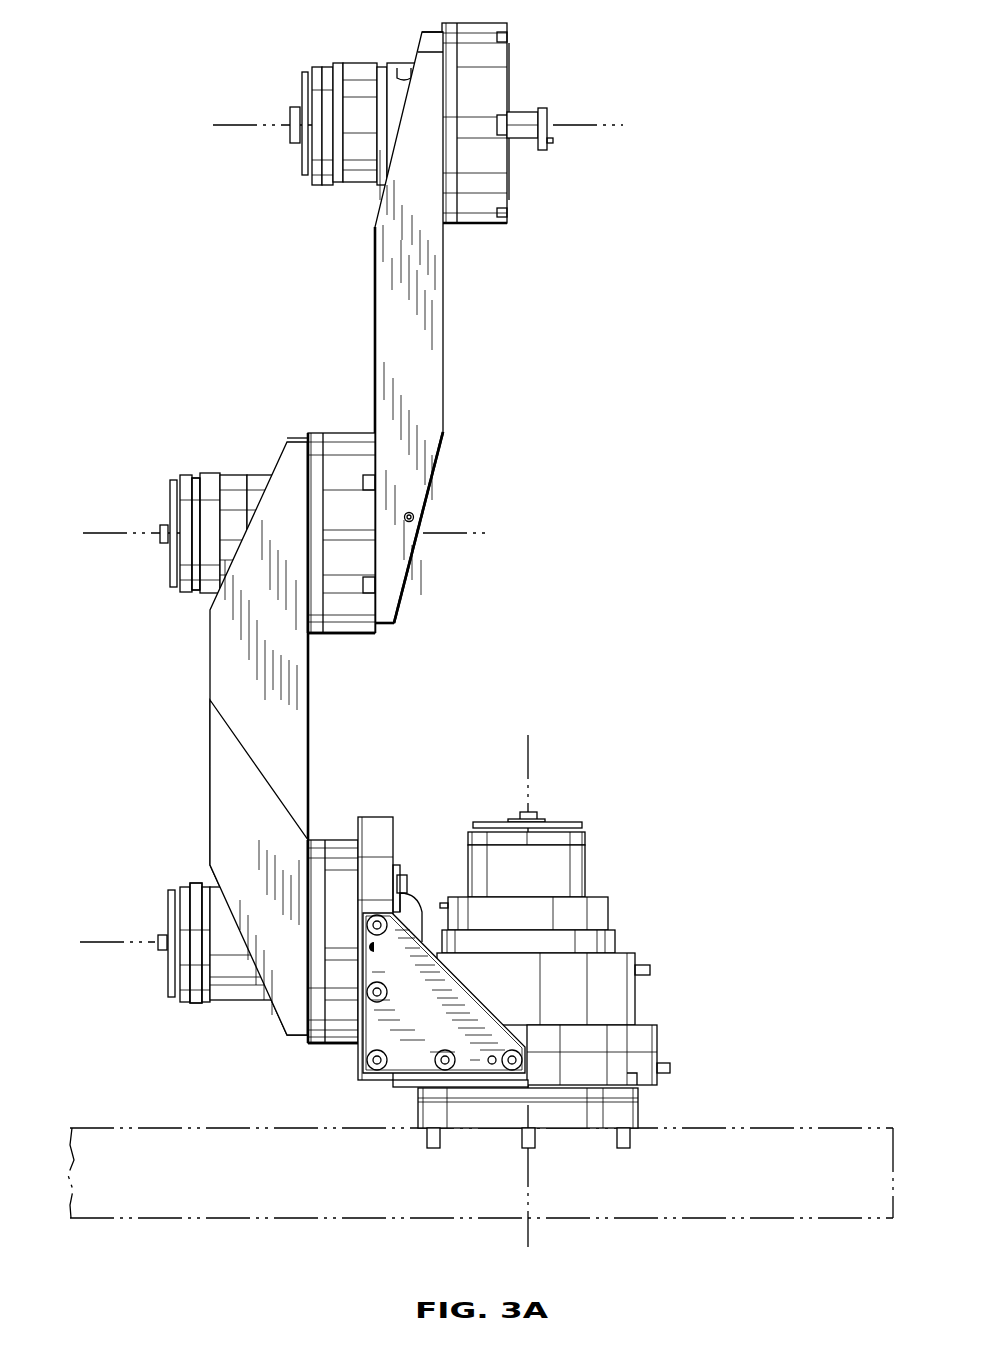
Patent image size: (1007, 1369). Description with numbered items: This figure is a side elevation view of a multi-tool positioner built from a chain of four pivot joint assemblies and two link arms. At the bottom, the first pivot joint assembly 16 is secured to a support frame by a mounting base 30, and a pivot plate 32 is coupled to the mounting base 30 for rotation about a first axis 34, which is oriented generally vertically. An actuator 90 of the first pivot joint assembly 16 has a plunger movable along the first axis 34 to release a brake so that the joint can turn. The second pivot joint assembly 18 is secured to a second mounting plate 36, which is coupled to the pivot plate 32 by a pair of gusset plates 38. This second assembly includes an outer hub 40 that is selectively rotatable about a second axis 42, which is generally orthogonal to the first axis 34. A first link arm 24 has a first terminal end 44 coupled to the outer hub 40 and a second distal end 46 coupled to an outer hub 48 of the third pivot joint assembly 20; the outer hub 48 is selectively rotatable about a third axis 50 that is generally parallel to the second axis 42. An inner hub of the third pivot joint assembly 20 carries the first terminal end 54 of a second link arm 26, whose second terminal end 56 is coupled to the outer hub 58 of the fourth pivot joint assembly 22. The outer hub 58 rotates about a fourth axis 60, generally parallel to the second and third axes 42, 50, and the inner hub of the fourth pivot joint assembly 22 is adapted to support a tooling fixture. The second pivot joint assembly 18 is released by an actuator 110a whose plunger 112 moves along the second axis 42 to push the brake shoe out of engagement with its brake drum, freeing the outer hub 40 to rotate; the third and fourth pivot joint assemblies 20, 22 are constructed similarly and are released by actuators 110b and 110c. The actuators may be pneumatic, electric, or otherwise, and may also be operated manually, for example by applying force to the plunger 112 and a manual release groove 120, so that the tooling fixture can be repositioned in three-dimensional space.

The first pivot joint assembly 16 is at (565, 980).
The second pivot joint assembly 18 is at (211, 948).
The third pivot joint assembly 20 is at (204, 533).
The fourth pivot joint assembly 22 is at (332, 127).
The first link arm 24 is at (203, 735).
The second link arm 26 is at (383, 324).
The mounting base 30 is at (638, 1115).
The pivot plate 32 is at (658, 1052).
The first axis 34 is at (530, 750).
The second mounting plate 36 is at (378, 817).
The gusset plates 38 is at (457, 997).
The outer hub 40 is at (333, 1033).
The second axis 42 is at (102, 942).
The first terminal end 44 is at (278, 988).
The second distal end 46 is at (285, 482).
The outer hub 48 is at (348, 628).
The third axis 50 is at (473, 533).
The first terminal end 54 is at (400, 583).
The second terminal end 56 is at (423, 52).
The outer hub 58 is at (500, 62).
The fourth axis 60 is at (567, 125).
The actuator 90 is at (590, 858).
The actuator 110a is at (185, 885).
The actuator 110b is at (188, 475).
The actuator 110c is at (352, 67).
The plunger 112 is at (298, 117).
The manual release groove 120 is at (208, 590).